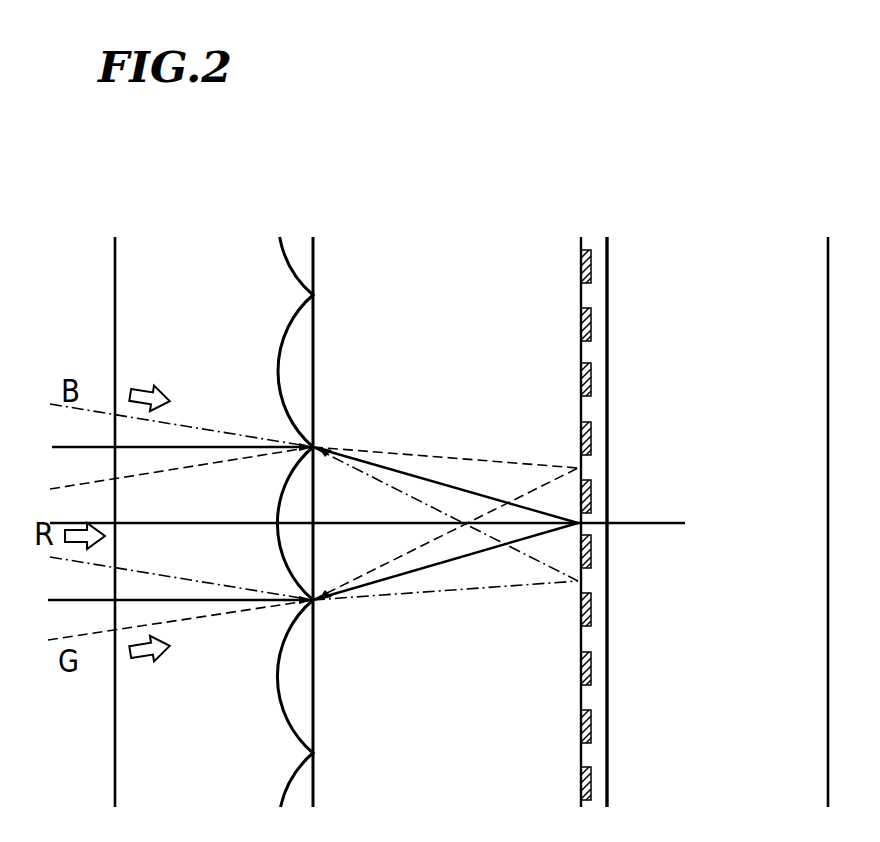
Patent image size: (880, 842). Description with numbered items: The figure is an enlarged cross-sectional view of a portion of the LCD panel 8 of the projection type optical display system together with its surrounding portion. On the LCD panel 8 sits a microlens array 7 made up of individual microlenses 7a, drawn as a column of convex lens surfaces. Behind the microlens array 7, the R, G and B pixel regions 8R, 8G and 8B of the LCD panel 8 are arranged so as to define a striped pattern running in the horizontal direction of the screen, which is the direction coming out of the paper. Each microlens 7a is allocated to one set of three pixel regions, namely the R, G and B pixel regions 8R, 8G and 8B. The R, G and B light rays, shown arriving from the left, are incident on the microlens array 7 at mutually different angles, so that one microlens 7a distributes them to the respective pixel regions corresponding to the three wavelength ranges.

The microlens array 7 is at (120, 206).
The microlens 7a is at (284, 264).
The LCD panel 8 is at (826, 207).
The G pixel region 8G is at (605, 292).
The R pixel region 8R is at (605, 355).
The B pixel region 8B is at (605, 408).